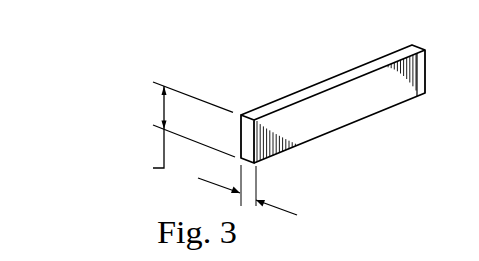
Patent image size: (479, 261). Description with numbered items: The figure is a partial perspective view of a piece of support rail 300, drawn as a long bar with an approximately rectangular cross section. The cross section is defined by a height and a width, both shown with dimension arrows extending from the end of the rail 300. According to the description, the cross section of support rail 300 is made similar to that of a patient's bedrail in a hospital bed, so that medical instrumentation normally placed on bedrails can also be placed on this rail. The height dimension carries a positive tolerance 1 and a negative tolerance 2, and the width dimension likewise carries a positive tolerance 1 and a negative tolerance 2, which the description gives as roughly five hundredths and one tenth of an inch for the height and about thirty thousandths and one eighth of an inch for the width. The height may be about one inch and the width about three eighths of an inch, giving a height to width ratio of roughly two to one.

The support rail 300 is at (298, 72).
The positive tolerance (+dH1 / +dW1) 1 is at (154, 131).
The negative tolerance (-dH2 / -dW2) 2 is at (251, 206).